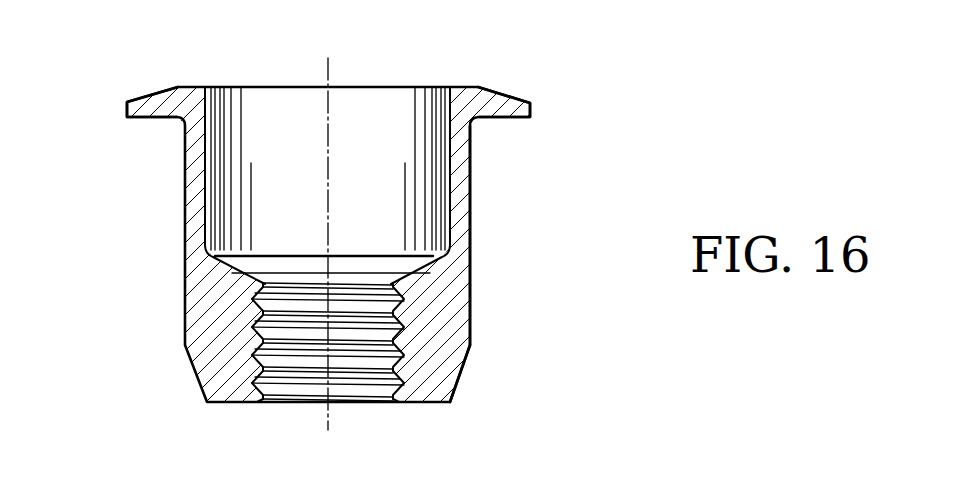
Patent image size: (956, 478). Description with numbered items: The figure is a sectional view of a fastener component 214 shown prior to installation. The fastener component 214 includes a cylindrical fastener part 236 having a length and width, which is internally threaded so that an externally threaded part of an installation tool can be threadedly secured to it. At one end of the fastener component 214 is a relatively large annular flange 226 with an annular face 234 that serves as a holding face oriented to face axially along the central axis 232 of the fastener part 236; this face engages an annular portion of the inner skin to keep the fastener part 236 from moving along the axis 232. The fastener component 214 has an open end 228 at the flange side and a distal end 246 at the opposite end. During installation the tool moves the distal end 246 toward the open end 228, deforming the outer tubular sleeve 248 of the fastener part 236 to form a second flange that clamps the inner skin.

The fastener component 214 is at (503, 85).
The annular flange 226 is at (533, 110).
The open end 228 is at (448, 110).
The axis 232 is at (329, 75).
The annular face 234 is at (155, 118).
The fastener part 236 is at (474, 273).
The distal end 246 is at (465, 372).
The outer tubular sleeve 248 is at (472, 193).